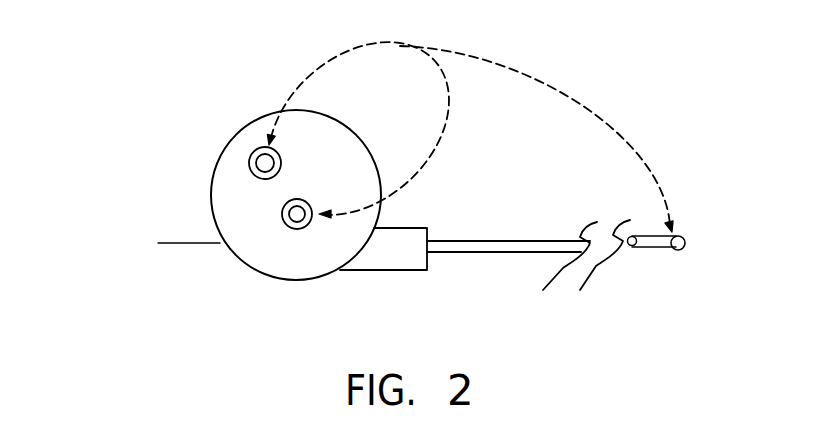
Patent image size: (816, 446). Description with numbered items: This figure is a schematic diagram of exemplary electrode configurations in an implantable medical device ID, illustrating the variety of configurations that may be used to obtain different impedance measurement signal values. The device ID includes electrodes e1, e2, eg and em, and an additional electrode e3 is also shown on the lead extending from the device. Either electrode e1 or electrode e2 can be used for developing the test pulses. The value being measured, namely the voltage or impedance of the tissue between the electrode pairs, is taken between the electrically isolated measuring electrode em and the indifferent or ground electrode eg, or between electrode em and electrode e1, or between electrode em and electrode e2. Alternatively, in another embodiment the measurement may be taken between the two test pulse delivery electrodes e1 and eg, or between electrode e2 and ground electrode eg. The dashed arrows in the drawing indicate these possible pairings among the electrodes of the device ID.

The device ID is at (213, 118).
The electrode e1 is at (250, 163).
The measuring electrode em is at (284, 221).
The indifferent or ground electrode eg is at (320, 262).
The electrode e2 is at (677, 250).
The third element e3 is at (627, 248).